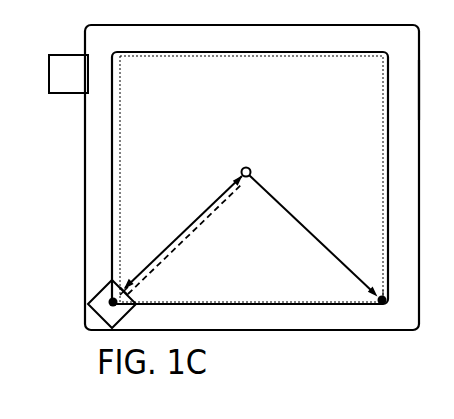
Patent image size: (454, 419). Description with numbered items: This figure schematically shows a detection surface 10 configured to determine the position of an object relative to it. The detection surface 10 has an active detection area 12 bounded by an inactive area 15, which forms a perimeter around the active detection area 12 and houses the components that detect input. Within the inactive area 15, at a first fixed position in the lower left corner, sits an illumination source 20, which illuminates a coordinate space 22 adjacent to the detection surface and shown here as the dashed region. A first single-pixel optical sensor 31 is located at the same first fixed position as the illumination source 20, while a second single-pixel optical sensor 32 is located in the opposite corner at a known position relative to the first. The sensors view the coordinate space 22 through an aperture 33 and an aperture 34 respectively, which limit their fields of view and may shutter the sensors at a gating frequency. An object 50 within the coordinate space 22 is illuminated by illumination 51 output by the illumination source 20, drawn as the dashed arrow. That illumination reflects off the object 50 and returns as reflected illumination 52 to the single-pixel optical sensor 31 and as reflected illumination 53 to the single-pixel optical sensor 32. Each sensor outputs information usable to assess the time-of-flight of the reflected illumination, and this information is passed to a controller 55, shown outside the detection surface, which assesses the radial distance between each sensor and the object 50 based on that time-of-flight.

The detection surface 10 is at (78, 19).
The active detection area 12 is at (389, 110).
The inactive area 15 is at (374, 45).
The coordinate space 22 is at (374, 79).
The controller 55 is at (78, 84).
The illumination source 20 is at (87, 304).
The object 50 is at (249, 167).
The illumination 51 is at (194, 229).
The reflected illumination 52 is at (201, 214).
The reflected illumination 53 is at (288, 208).
The single-pixel optical sensor 31 is at (116, 305).
The single-pixel optical sensor 32 is at (386, 303).
The aperture 33 is at (128, 292).
The aperture 34 is at (383, 291).